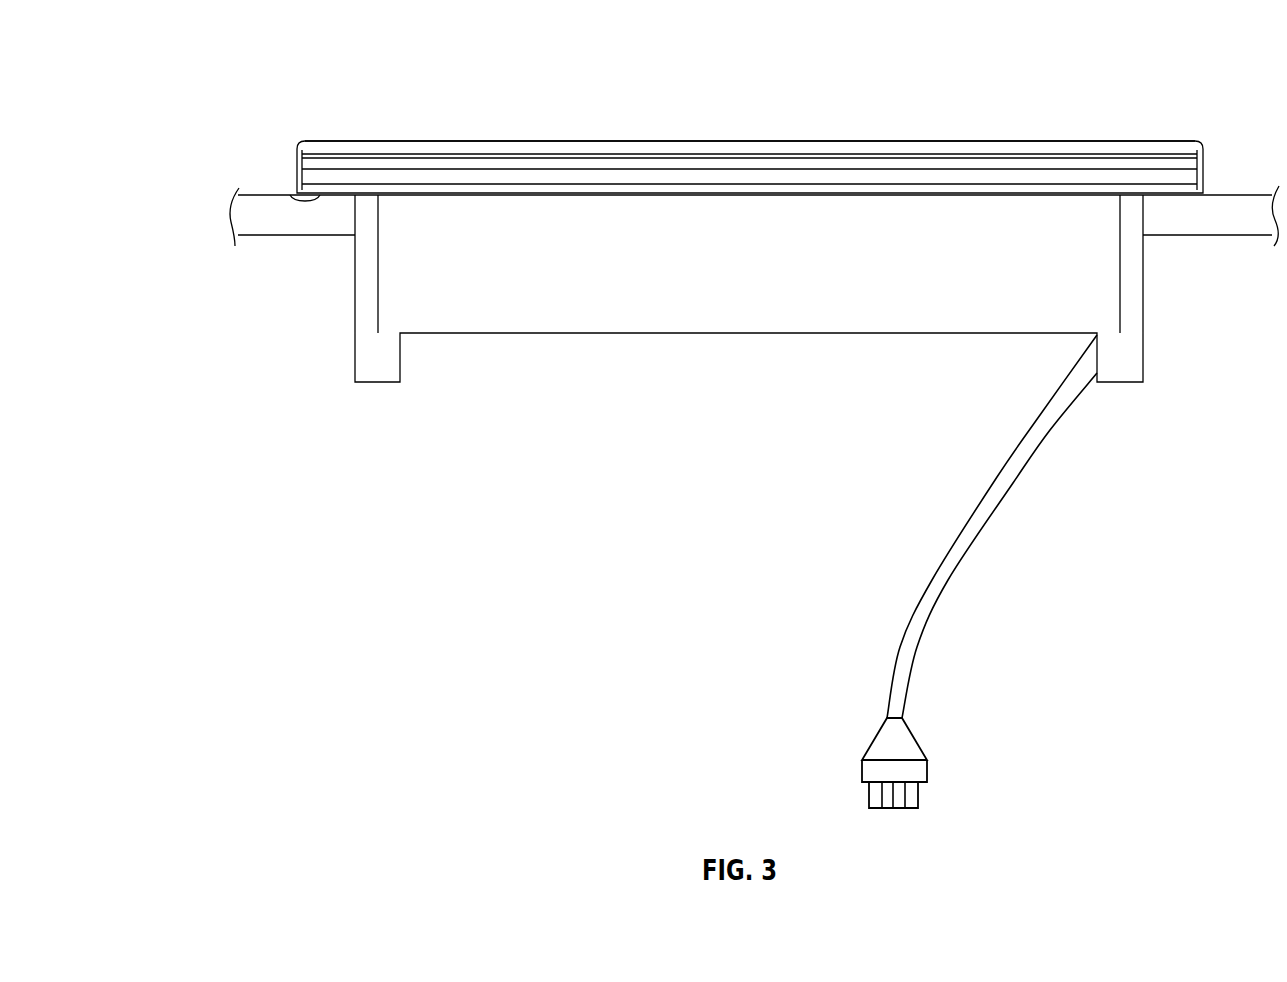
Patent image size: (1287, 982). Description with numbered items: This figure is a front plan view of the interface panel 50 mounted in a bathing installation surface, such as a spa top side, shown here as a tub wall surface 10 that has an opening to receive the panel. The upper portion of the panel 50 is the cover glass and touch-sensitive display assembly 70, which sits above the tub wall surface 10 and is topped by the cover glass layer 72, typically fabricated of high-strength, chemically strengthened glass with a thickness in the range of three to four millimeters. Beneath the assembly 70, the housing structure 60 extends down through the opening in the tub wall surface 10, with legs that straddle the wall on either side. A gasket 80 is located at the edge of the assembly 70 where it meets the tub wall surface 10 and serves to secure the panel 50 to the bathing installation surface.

The interface panel 50 is at (196, 74).
The tub wall surface 10 is at (292, 228).
The housing structure 60 is at (728, 321).
The cover glass and touch-sensitive display assembly 70 is at (297, 149).
The cover glass layer 72 is at (612, 148).
The gasket 80 is at (298, 193).